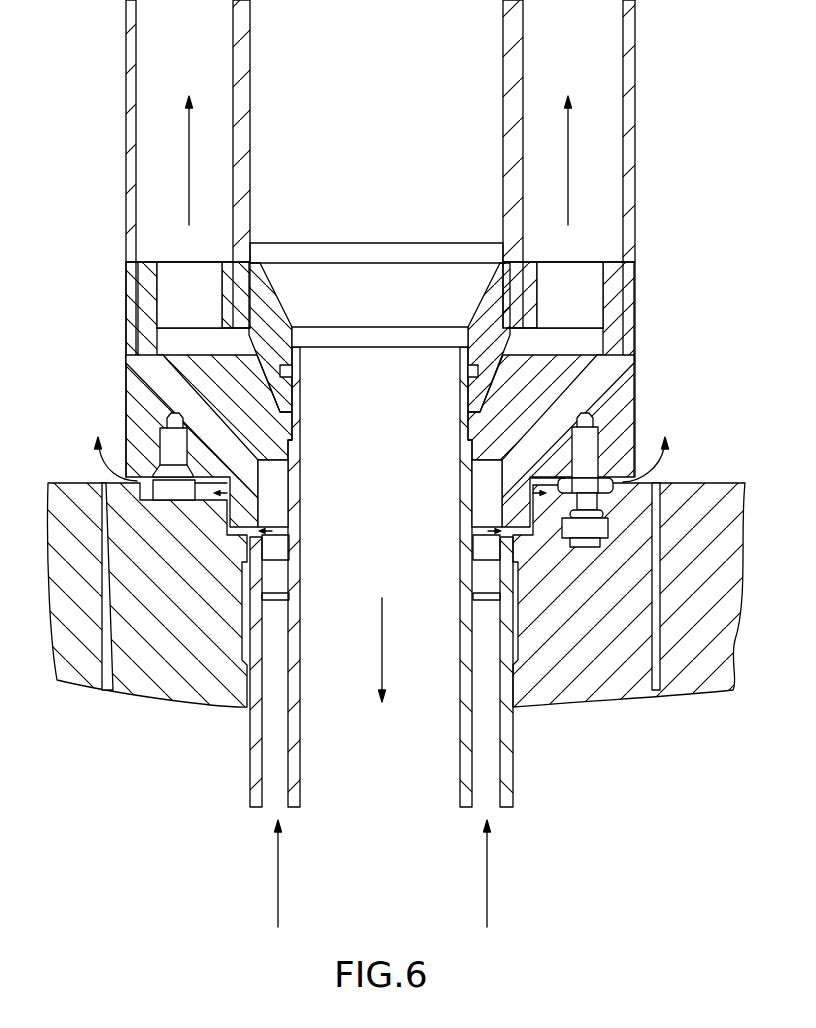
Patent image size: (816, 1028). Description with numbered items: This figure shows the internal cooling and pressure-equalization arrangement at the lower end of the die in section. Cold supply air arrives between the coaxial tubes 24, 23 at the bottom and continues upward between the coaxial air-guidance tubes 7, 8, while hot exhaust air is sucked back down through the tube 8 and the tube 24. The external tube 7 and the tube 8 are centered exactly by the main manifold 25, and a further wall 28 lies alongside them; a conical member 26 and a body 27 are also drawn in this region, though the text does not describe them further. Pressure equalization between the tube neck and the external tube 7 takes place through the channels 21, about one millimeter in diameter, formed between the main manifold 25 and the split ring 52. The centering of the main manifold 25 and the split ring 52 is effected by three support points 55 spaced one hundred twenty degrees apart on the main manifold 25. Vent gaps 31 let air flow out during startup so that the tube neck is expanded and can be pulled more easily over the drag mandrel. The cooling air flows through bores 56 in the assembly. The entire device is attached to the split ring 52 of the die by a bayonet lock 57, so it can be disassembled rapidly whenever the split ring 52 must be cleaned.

The external tube 7 is at (626, 174).
The tube 8 is at (515, 38).
The inner tube wall 28 is at (222, 160).
The conical funnel member 26 is at (488, 302).
The bores 56 is at (172, 293).
The left housing body 27 is at (198, 376).
The main manifold 25 is at (606, 392).
The split ring 52 is at (128, 512).
The bayonet lock 57 is at (590, 531).
The channels 21 is at (690, 477).
The support points 55 is at (227, 515).
The vent gaps 31 is at (533, 490).
The tube 24 is at (297, 730).
The tube 23 is at (507, 747).